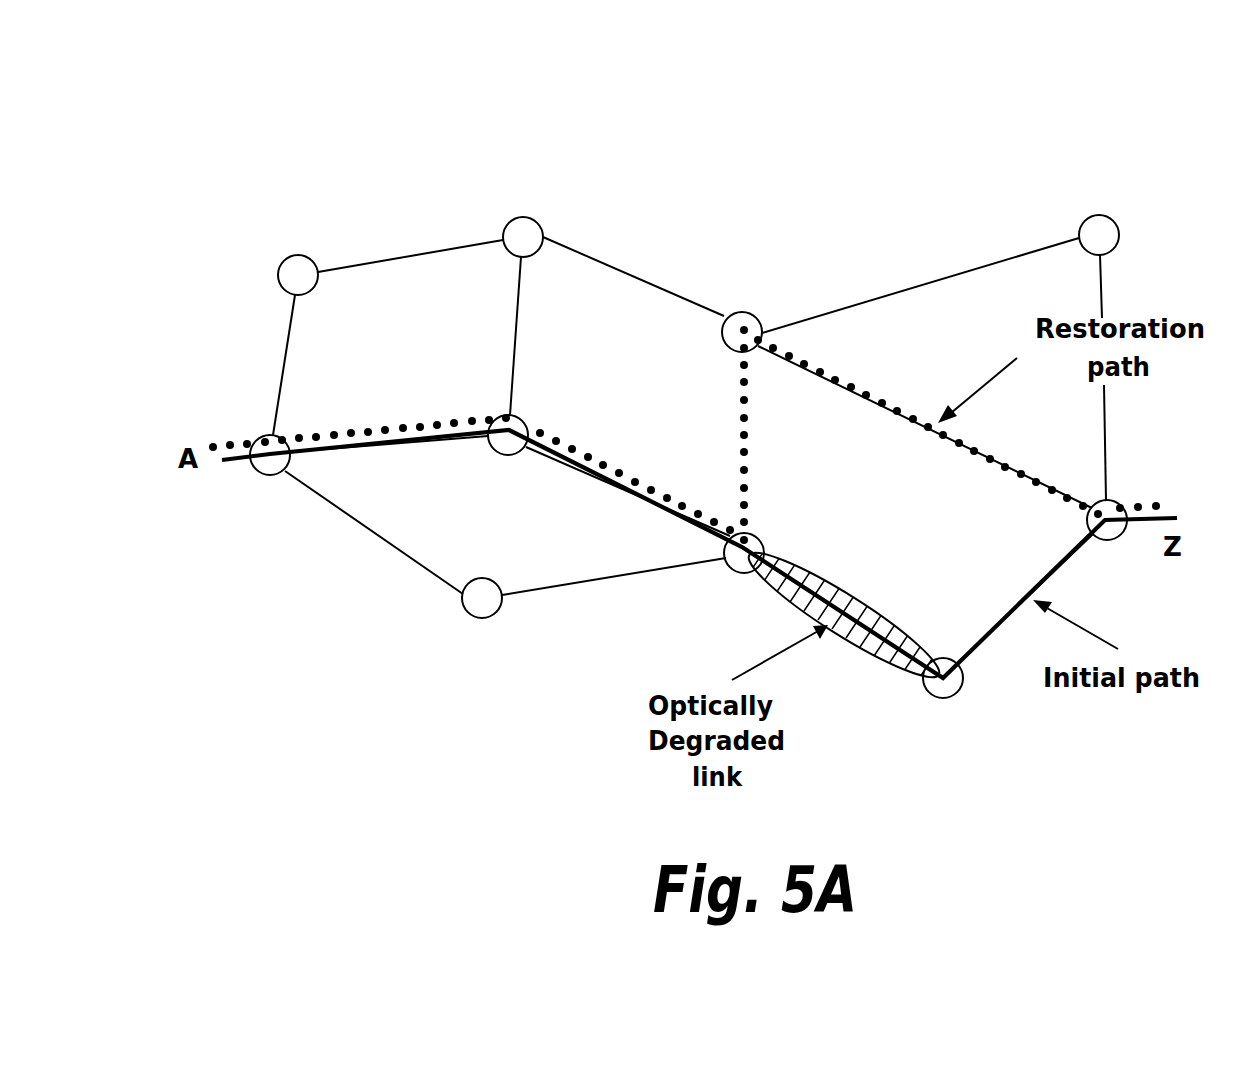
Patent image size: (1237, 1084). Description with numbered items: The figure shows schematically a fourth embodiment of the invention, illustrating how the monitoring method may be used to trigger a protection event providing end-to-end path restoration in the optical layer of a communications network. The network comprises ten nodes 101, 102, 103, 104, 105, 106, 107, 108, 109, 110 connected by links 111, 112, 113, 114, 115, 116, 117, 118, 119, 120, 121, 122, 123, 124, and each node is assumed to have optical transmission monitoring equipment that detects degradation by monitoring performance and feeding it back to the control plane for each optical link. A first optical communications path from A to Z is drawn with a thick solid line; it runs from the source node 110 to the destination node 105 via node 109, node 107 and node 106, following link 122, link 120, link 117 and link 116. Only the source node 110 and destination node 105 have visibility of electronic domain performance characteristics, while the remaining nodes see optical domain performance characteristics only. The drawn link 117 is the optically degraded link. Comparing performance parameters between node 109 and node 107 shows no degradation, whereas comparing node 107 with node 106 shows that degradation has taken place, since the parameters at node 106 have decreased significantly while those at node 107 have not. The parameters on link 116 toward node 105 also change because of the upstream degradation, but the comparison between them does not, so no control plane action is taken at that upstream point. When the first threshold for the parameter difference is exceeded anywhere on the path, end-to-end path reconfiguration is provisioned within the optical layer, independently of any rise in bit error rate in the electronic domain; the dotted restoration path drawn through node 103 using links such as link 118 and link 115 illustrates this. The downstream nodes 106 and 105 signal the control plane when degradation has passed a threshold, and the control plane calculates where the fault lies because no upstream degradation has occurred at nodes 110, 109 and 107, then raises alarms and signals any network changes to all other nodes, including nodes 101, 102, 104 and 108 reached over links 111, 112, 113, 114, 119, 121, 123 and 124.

The node 101 is at (278, 275).
The node 102 is at (527, 217).
The node 103 is at (748, 312).
The node 104 is at (1113, 218).
The destination node 105 is at (1112, 500).
The node 106 is at (940, 698).
The node 107 is at (725, 553).
The node 108 is at (465, 608).
The node 109 is at (522, 420).
The source node 110 is at (263, 478).
The link 111 is at (392, 252).
The link 112 is at (632, 270).
The link 113 is at (920, 283).
The link 114 is at (1104, 283).
The link 115 is at (950, 440).
The link 116 is at (1073, 555).
The link 117 is at (785, 605).
The link 118 is at (742, 426).
The link 119 is at (585, 593).
The link 120 is at (572, 477).
The link 121 is at (516, 352).
The link 122 is at (425, 425).
The link 123 is at (367, 532).
The link 124 is at (280, 373).